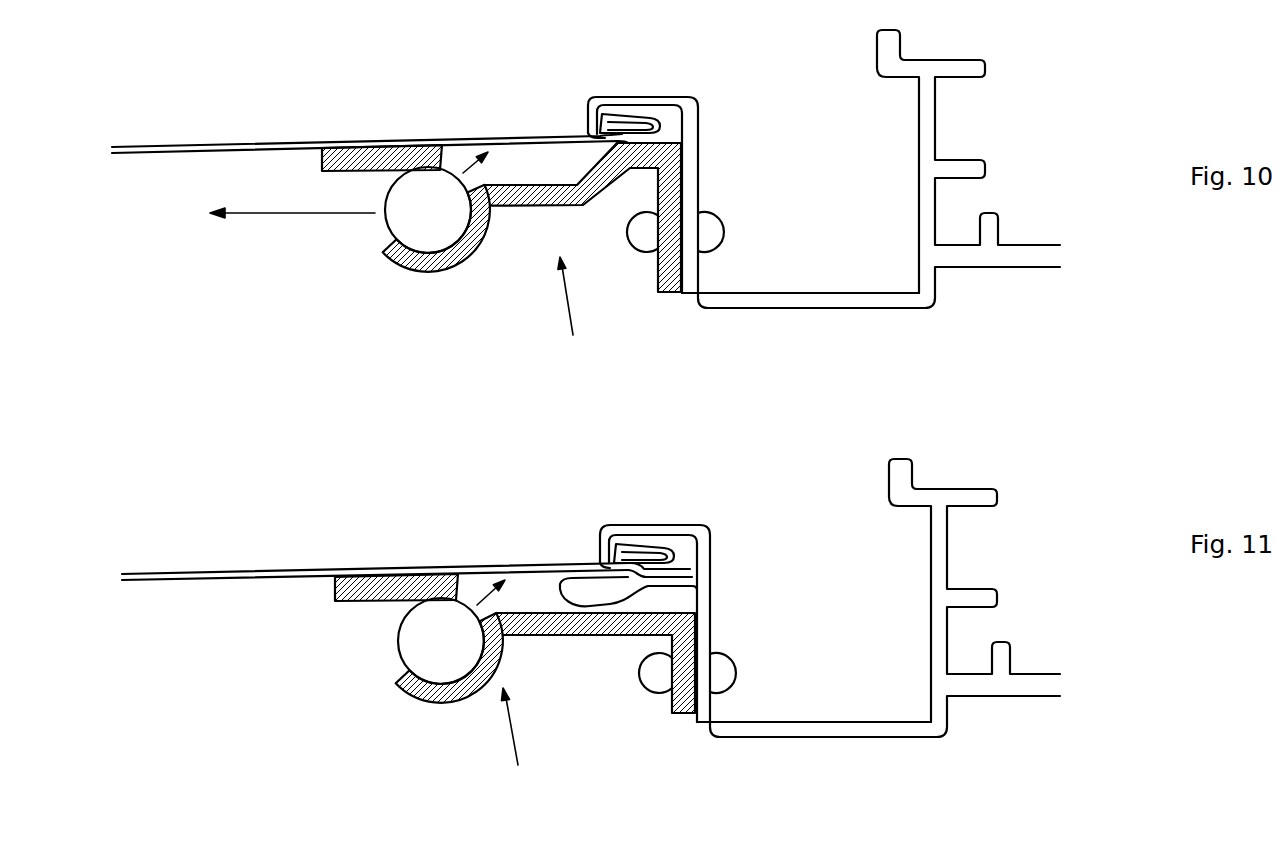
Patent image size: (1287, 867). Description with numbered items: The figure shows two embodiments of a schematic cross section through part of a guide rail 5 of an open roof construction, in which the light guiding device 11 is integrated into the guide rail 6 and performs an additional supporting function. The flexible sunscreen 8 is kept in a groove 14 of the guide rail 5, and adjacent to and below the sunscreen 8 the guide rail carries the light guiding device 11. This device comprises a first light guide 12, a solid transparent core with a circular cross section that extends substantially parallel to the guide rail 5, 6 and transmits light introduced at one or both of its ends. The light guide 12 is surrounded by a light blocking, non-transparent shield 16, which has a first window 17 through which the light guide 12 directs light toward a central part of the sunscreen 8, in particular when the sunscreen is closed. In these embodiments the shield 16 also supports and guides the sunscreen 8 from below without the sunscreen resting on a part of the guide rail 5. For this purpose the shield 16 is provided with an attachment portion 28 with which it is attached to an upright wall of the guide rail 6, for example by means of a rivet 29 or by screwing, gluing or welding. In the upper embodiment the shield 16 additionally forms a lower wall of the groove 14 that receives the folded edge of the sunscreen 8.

In FIG. 10, the guide rail 5 is at (765, 313).
In FIG. 11, the guide rail 5 is at (765, 740).
In FIG. 10, the guide rail 6 is at (888, 262).
In FIG. 11, the guide rail 6 is at (898, 698).
In FIG. 10, the flexible sunscreen 8 is at (150, 155).
In FIG. 11, the flexible sunscreen 8 is at (170, 585).
In FIG. 10, the light guiding device 11 is at (530, 264).
In FIG. 11, the light guiding device 11 is at (507, 694).
In FIG. 10, the first light guide 12 is at (414, 234).
In FIG. 11, the first light guide 12 is at (428, 658).
In FIG. 10, the groove 14 is at (668, 126).
In FIG. 11, the groove 14 is at (680, 553).
In FIG. 10, the shield 16 is at (490, 245).
In FIG. 11, the shield 16 is at (449, 658).
In FIG. 10, the first window 17 is at (368, 220).
In FIG. 10, the attachment portion 28 is at (657, 200).
In FIG. 11, the attachment portion 28 is at (648, 625).
In FIG. 10, the rivet 29 is at (705, 235).
In FIG. 11, the rivet 29 is at (697, 727).